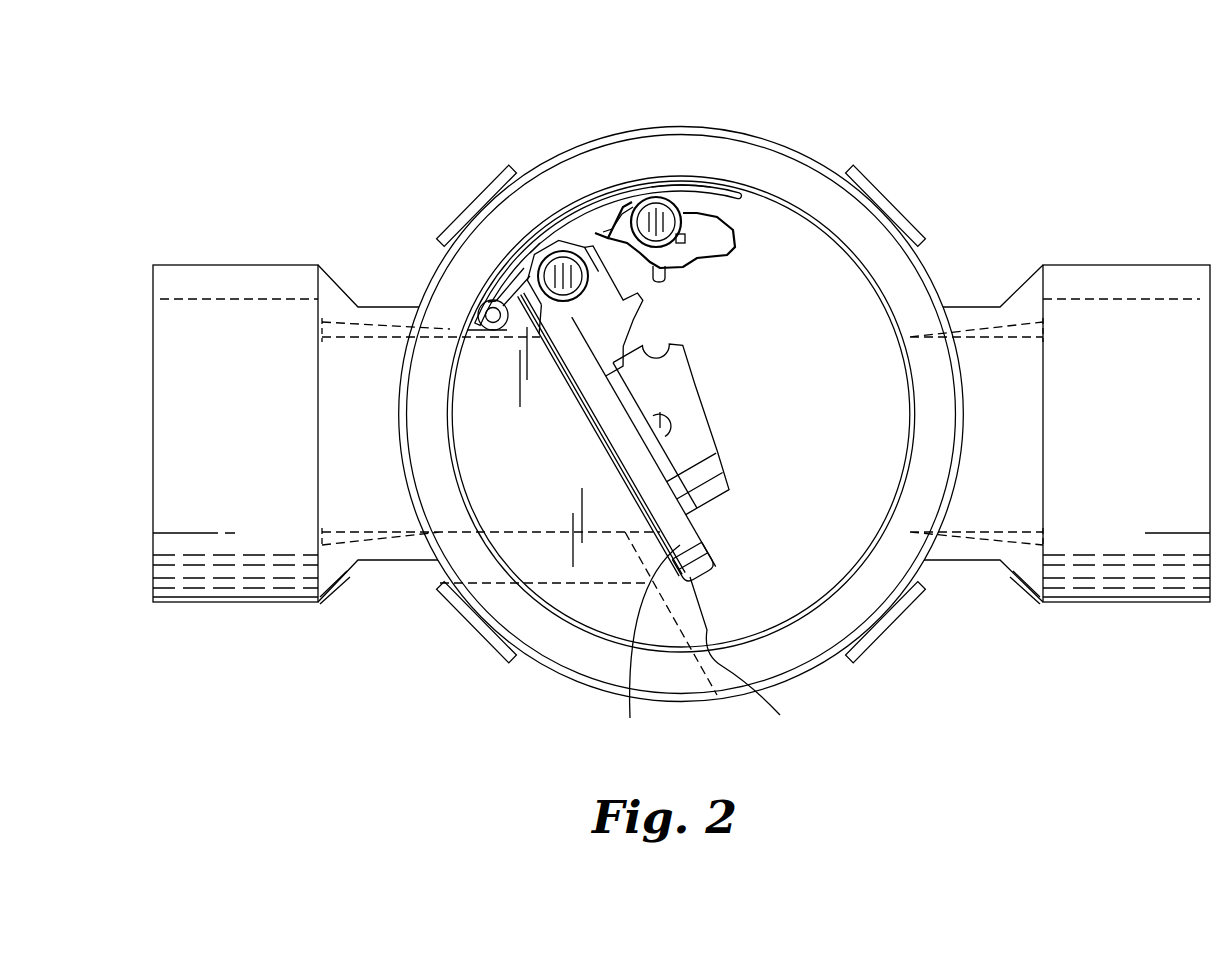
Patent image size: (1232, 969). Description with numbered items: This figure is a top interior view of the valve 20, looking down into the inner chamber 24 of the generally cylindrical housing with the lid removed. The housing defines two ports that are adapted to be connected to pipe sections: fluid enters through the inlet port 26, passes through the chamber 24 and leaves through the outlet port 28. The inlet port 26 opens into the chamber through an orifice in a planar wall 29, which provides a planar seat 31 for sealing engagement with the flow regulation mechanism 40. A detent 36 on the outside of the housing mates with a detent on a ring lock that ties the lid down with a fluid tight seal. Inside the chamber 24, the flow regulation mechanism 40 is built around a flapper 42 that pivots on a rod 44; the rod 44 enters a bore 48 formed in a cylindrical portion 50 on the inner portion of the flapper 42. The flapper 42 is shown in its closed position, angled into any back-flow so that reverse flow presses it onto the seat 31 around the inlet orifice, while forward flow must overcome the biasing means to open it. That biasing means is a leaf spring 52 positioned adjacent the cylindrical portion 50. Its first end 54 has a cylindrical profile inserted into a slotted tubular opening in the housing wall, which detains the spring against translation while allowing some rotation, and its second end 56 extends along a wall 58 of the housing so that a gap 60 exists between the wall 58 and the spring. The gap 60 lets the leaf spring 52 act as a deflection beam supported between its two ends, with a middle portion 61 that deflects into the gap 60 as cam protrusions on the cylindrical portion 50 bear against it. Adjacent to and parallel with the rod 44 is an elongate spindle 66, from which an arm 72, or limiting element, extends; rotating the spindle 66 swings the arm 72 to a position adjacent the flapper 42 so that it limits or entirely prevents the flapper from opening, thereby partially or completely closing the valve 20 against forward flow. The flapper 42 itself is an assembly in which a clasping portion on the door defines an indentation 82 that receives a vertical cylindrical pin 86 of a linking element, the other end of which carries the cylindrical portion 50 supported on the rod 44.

The valve 20 is at (889, 100).
The inner chamber 24 is at (787, 277).
The inlet port 26 is at (232, 264).
The outlet port 28 is at (1126, 264).
The planar wall 29 is at (747, 661).
The planar seat 31 is at (640, 572).
The detent 36 is at (890, 632).
The flow regulation mechanism 40 is at (565, 392).
The flapper 42 is at (707, 406).
The rod 44 is at (583, 258).
The bore 48 is at (538, 250).
The cylindrical portion 50 is at (566, 262).
The leaf spring 52 is at (622, 205).
The first end of the leaf spring 54 is at (480, 305).
The second end of the leaf spring 56 is at (707, 190).
The wall 58 is at (655, 174).
The gap 60 is at (524, 264).
The middle portion 61 is at (493, 300).
The spindle 66 is at (664, 216).
The arm 72 is at (722, 243).
The indentation 82 is at (724, 421).
The cylindrical pin 86 is at (678, 444).